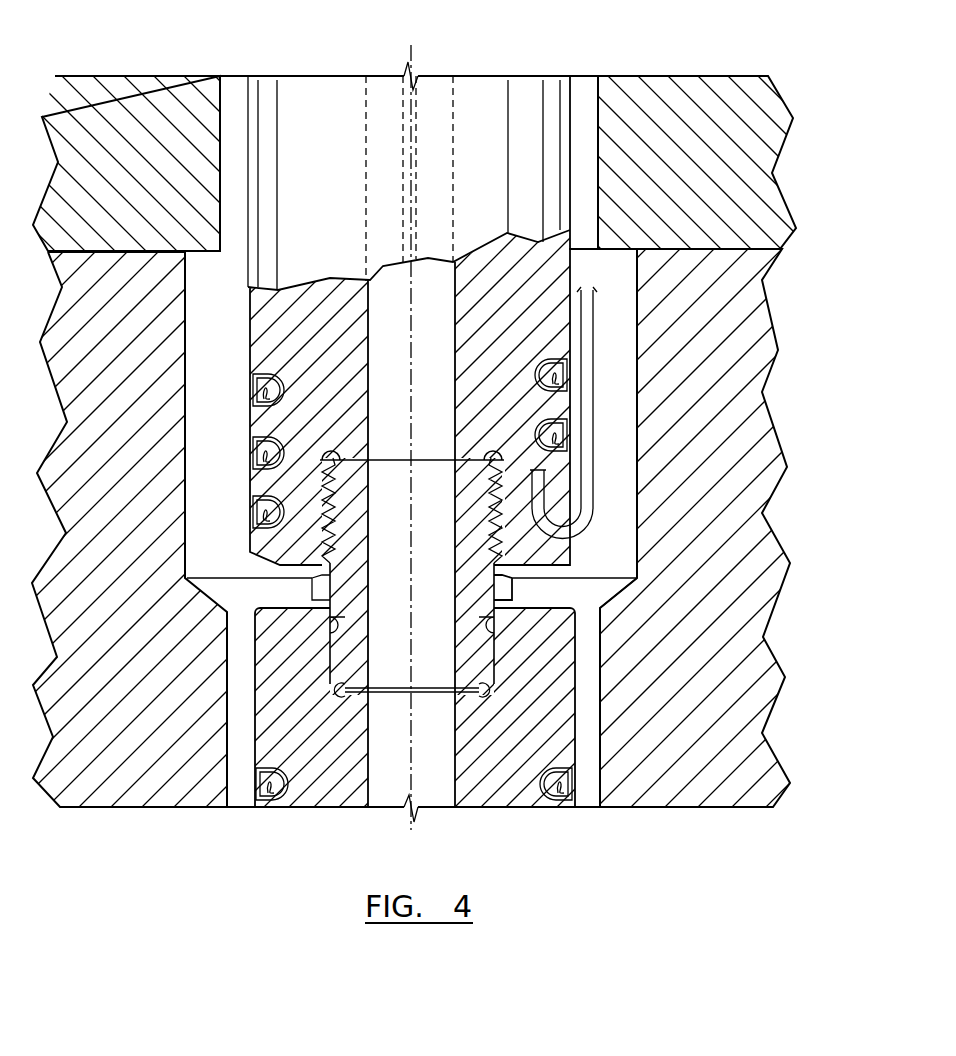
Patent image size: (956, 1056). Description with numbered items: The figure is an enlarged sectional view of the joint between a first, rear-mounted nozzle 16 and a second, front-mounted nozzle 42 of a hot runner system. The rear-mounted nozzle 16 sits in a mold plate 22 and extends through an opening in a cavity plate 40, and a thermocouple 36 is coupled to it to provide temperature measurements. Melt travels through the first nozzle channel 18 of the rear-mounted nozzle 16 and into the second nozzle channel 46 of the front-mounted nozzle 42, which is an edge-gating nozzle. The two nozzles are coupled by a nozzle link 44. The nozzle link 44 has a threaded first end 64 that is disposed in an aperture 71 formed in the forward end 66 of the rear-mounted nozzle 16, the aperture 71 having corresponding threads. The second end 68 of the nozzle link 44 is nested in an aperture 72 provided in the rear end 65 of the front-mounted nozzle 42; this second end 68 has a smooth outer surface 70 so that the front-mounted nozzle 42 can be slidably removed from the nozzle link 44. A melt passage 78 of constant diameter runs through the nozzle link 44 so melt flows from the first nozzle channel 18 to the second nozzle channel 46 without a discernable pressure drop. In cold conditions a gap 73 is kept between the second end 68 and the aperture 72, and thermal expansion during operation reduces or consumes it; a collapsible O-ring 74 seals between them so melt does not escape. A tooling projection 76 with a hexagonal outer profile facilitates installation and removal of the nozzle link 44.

The mold plate 22 is at (768, 98).
The cavity plate 40 is at (732, 297).
The first, rear-mounted nozzle 16 is at (528, 317).
The first nozzle channel 18 is at (446, 321).
The second nozzle channel 46 is at (451, 759).
The thermocouple 36 is at (587, 430).
The melt passage 78 is at (441, 513).
The tooling projection 76 is at (565, 592).
The rear end 65 is at (610, 620).
The nozzle link 44 is at (486, 651).
The aperture 72 is at (510, 653).
The second end 68 is at (332, 650).
The second, front-mounted nozzle 42 is at (283, 683).
The smooth outer surface 70 is at (327, 678).
The gap 73 is at (478, 700).
The collapsible O-ring 74 is at (508, 700).
The forward end 66 is at (313, 428).
The aperture 71 is at (330, 460).
The first end 64 is at (326, 522).